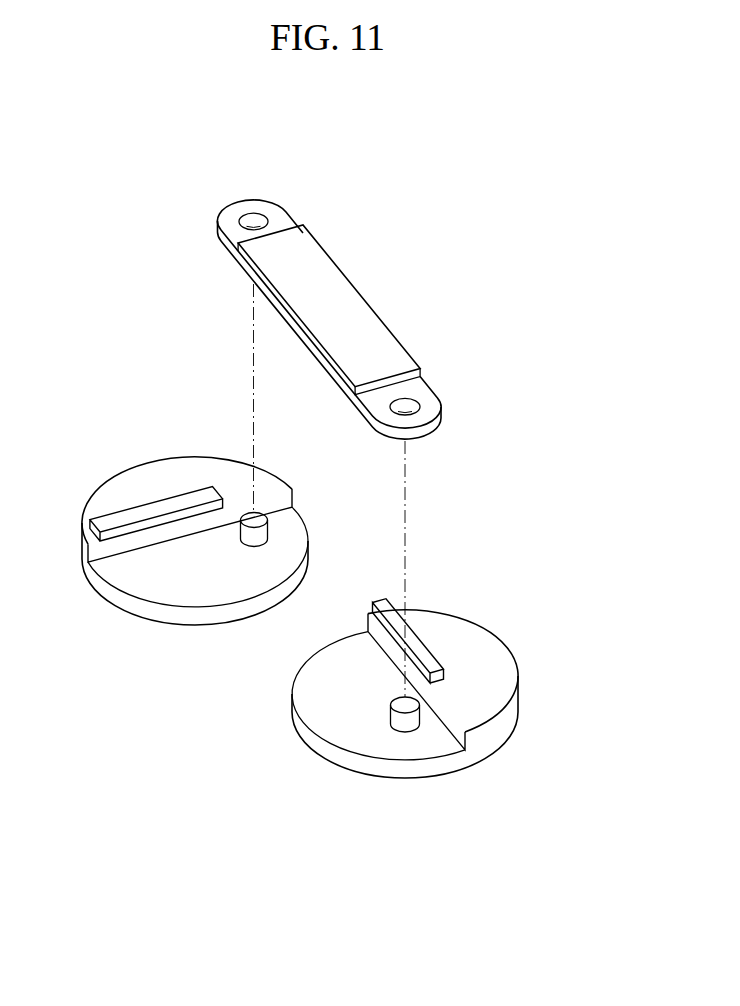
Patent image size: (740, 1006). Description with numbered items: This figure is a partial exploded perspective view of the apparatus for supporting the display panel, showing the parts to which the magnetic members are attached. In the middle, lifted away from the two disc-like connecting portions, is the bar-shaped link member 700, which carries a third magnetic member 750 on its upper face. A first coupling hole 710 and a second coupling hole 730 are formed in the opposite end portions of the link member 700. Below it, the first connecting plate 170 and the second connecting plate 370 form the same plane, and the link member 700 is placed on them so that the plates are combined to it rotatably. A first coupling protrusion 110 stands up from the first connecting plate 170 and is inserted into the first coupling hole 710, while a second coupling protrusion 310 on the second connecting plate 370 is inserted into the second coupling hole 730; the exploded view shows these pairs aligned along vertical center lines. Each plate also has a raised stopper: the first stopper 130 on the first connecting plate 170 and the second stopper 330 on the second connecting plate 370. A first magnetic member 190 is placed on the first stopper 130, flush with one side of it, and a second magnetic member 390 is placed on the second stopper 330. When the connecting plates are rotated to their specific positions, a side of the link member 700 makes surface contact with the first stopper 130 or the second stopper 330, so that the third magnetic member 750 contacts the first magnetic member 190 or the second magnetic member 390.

The link member 700 is at (430, 410).
The first coupling hole 710 is at (258, 219).
The second coupling hole 730 is at (413, 401).
The third magnetic member 750 is at (352, 297).
The first stopper 130 is at (165, 470).
The first connecting plate 170 is at (137, 582).
The first magnetic member 190 is at (117, 515).
The first coupling protrusion 110 is at (251, 543).
The second stopper 330 is at (489, 697).
The second connecting plate 370 is at (353, 732).
The second magnetic member 390 is at (427, 653).
The second coupling protrusion 310 is at (408, 727).